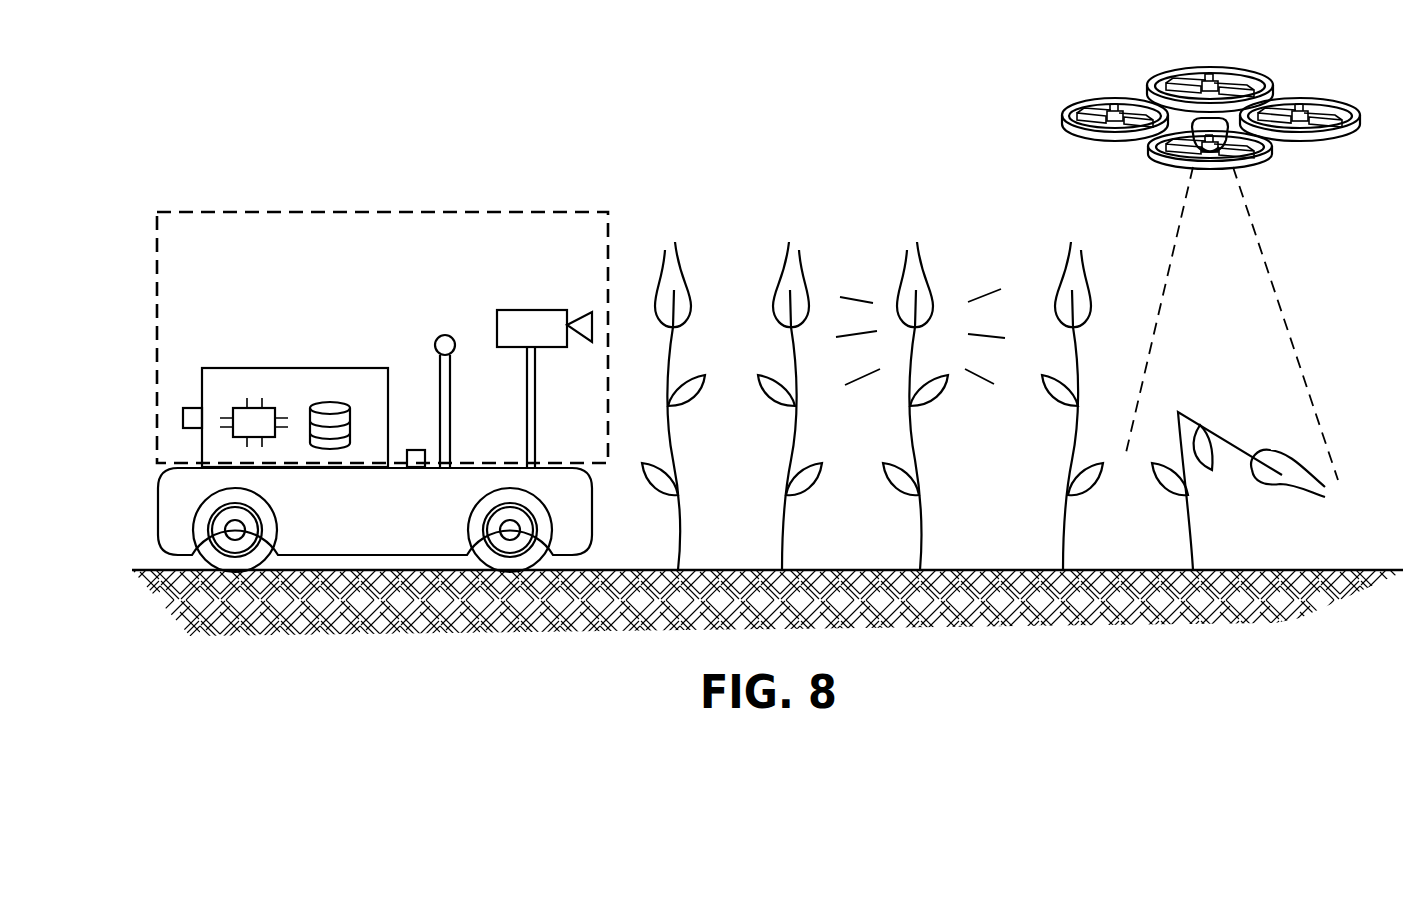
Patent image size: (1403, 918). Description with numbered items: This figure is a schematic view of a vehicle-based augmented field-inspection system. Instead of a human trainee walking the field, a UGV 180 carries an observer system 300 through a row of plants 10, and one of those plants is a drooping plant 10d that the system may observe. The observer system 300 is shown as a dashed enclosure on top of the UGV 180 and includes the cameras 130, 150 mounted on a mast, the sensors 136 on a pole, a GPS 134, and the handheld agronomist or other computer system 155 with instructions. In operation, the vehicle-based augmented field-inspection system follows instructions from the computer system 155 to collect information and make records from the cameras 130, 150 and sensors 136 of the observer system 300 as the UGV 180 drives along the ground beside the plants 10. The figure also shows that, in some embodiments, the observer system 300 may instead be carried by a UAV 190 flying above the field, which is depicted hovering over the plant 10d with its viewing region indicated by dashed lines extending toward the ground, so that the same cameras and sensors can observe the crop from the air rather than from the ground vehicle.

The plants 10 is at (790, 347).
The diseased plant 10d is at (1238, 444).
The cameras 130 is at (507, 347).
The light source 150 is at (537, 305).
The GPS 134 is at (410, 450).
The sensors 136 is at (438, 329).
The computer system 155 is at (302, 368).
The UGV 180 is at (163, 510).
The UAV 190 is at (1253, 73).
The observer system 300 is at (610, 224).